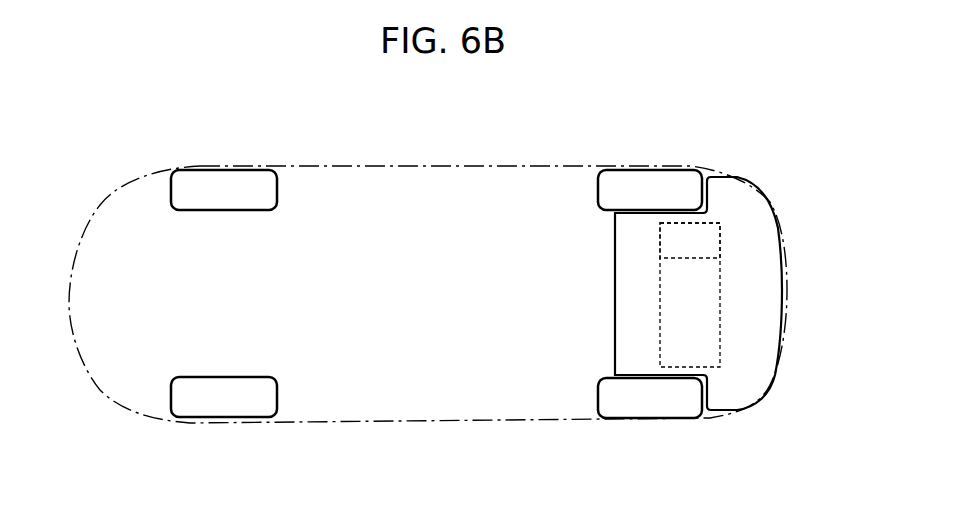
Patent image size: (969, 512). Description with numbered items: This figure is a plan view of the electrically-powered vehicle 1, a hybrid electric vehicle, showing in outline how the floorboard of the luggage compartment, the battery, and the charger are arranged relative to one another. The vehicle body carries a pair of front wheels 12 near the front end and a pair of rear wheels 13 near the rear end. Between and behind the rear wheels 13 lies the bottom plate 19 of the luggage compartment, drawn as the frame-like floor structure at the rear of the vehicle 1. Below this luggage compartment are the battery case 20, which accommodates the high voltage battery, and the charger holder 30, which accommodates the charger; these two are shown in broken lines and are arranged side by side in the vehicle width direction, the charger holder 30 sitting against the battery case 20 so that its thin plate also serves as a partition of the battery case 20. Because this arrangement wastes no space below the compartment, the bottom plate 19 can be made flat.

The electrically-powered vehicle 1 is at (100, 174).
The front wheels 12 is at (222, 178).
The rear wheels 13 is at (648, 177).
The bottom plate 19 is at (730, 193).
The battery case 20 is at (720, 338).
The charger holder 30 is at (720, 238).